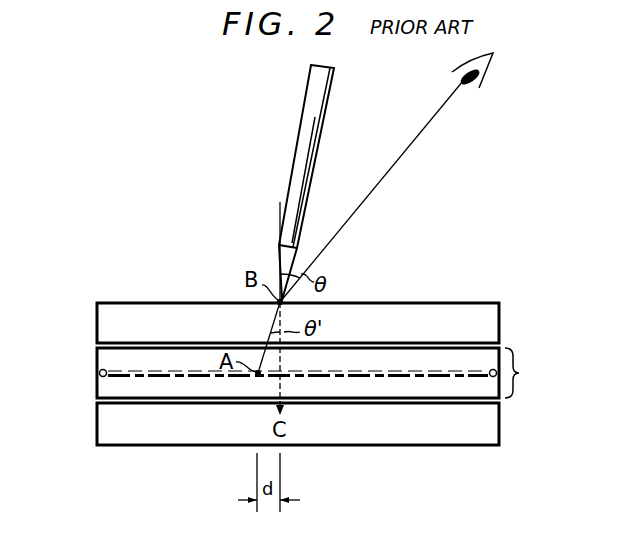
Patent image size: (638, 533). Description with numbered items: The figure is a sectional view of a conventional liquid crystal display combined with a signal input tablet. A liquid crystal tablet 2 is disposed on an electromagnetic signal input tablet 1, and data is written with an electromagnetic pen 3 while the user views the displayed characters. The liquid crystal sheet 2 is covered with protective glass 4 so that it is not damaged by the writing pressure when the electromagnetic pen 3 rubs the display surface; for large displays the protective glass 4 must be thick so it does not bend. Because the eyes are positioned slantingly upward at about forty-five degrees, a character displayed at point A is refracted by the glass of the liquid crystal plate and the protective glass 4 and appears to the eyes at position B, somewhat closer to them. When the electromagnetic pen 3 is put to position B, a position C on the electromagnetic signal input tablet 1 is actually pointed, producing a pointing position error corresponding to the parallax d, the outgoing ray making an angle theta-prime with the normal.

The electromagnetic signal input tablet 1 is at (500, 424).
The liquid crystal tablet 2 is at (520, 373).
The electromagnetic pen 3 is at (297, 143).
The protective glass 4 is at (500, 322).